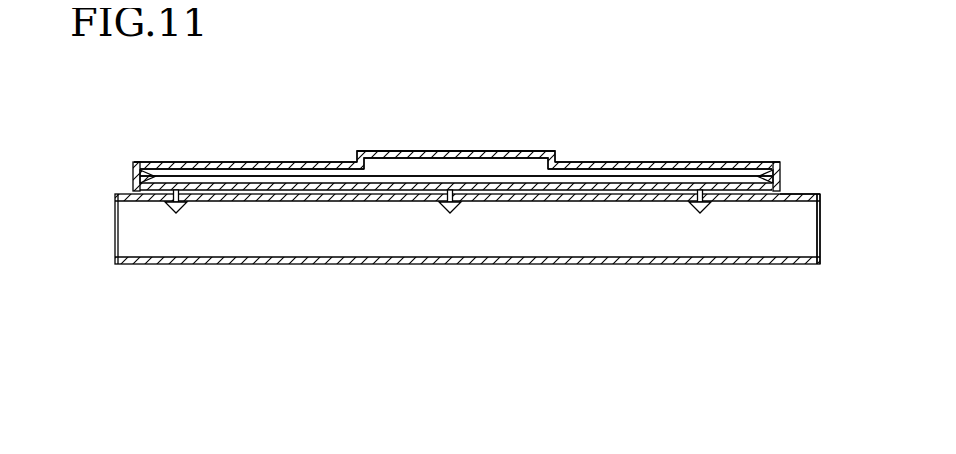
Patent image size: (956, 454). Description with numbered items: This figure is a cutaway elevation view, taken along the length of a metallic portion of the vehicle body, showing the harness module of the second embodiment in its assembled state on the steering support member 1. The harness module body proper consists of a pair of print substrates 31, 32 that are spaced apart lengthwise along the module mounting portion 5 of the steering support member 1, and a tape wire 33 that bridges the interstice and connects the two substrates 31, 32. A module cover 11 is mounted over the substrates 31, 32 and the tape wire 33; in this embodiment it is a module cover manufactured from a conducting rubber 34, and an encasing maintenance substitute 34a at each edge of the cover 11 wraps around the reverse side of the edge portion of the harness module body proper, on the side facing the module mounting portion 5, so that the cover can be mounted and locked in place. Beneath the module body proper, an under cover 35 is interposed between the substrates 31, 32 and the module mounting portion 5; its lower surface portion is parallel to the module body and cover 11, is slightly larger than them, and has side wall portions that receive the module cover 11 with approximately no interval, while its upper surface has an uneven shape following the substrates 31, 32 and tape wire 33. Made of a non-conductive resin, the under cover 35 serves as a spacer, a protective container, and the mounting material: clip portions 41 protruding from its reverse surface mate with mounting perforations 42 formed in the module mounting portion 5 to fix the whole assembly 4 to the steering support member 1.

The steering support member 1 is at (600, 276).
The heat exchange unit 4 is at (534, 126).
The module mounting portion 5 is at (809, 192).
The module cover 11 is at (676, 160).
The print substrate 31 is at (257, 168).
The print substrate 32 is at (618, 168).
The tape wire 33 is at (449, 157).
The module cover manufactured from a conducting rubber 34 is at (456, 176).
The encasing maintenance substitute 34a is at (146, 176).
The under cover 35 is at (785, 184).
The clip portion 41 is at (176, 214).
The mounting perforation 42 is at (178, 193).